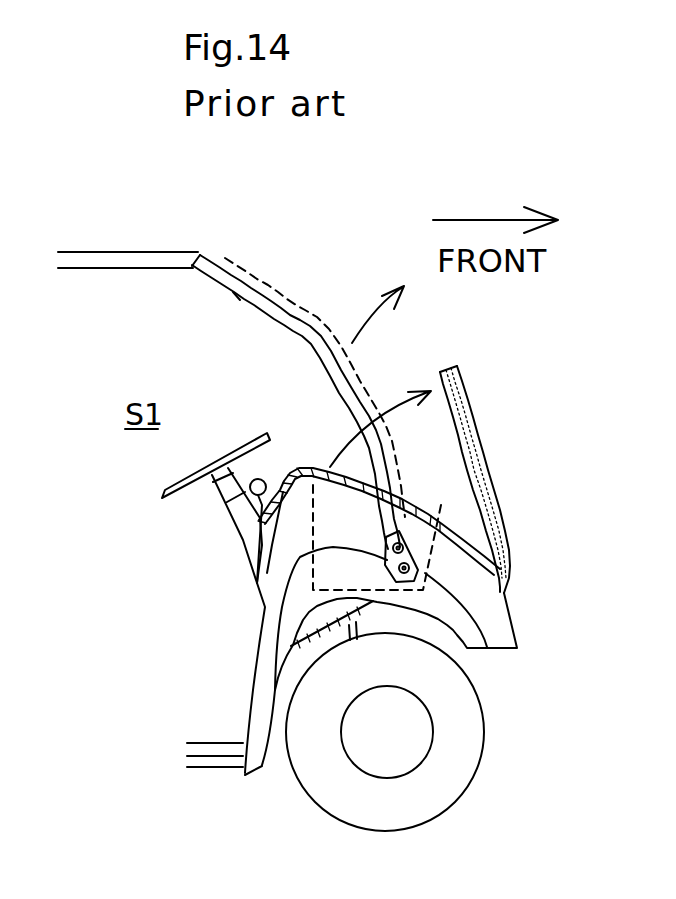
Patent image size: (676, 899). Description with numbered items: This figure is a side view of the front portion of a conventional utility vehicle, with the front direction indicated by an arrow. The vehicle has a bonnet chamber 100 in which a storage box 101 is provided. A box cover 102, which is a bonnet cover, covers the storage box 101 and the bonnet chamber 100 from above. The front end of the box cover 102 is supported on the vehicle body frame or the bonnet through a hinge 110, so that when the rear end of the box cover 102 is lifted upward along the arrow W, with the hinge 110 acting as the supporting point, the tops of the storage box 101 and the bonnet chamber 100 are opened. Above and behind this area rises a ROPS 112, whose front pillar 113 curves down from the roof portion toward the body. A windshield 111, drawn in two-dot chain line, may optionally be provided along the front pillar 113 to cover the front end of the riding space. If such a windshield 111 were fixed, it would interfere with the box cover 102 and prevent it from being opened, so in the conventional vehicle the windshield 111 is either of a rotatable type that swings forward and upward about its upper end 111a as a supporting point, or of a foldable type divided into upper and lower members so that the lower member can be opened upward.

The ROPS 112 is at (117, 207).
The windshield 111 is at (301, 385).
The upper end 111a is at (213, 250).
The front pillar 113 is at (312, 355).
The box cover 102 is at (468, 410).
The hinge 110 is at (505, 593).
The bonnet chamber 100 is at (307, 533).
The storage box 101 is at (267, 573).
The arrow W is at (377, 490).